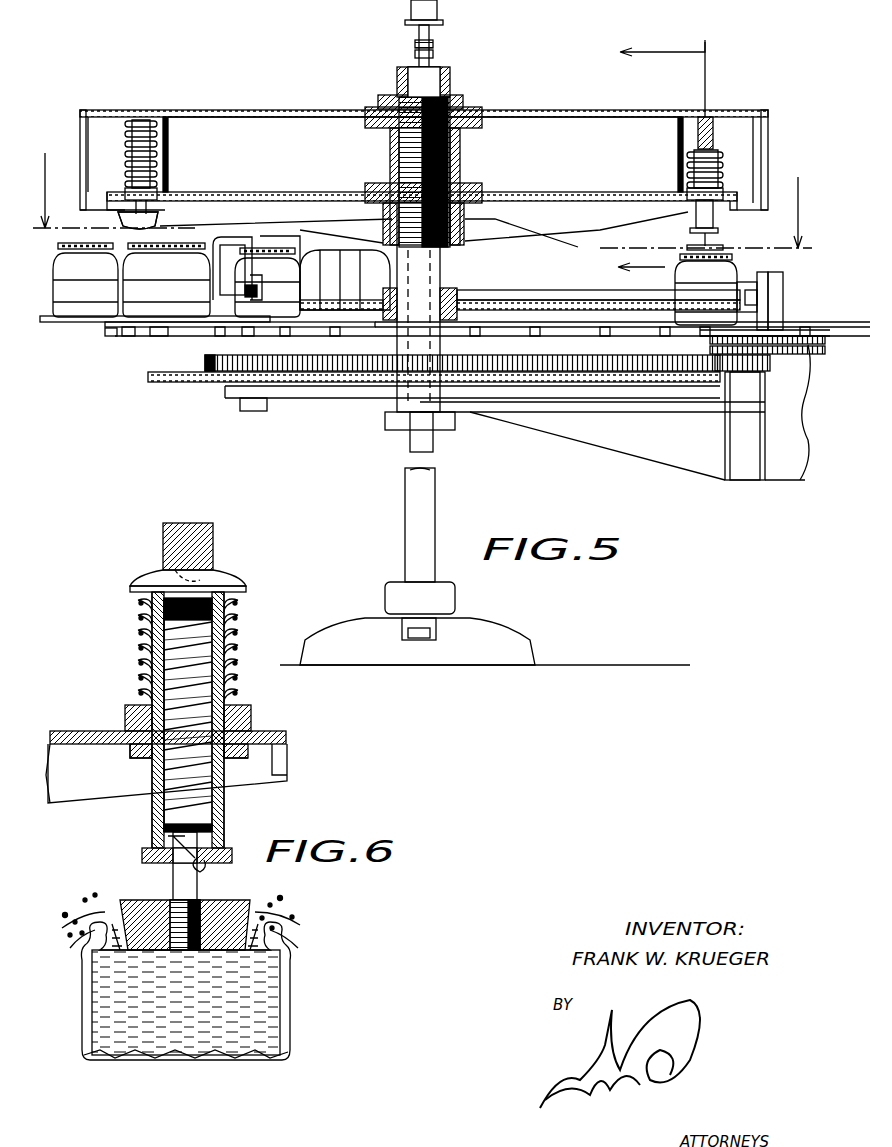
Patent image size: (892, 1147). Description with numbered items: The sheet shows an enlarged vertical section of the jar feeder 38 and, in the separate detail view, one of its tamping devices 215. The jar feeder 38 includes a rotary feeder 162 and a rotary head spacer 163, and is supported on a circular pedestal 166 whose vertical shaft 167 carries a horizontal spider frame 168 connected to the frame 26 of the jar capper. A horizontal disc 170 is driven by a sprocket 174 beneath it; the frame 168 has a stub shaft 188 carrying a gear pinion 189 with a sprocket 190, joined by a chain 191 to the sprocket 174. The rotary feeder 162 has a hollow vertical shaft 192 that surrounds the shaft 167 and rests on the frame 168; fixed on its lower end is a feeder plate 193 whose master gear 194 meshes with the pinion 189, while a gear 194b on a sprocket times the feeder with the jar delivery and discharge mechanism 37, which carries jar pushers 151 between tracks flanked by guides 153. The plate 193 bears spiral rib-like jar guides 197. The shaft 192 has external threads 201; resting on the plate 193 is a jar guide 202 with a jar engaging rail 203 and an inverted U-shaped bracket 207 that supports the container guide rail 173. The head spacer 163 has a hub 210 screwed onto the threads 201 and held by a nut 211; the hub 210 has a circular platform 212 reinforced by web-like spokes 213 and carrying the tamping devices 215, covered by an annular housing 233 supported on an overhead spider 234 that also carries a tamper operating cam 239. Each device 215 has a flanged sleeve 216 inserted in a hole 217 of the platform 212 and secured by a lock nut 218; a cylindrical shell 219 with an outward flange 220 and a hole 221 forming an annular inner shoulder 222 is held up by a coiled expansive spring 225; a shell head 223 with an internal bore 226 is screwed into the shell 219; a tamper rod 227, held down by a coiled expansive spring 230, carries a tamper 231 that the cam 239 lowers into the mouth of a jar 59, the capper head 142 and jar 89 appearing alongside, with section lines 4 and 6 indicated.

In FIG. 5, the jar feeder 38 is at (192, 53).
In FIG. 5, the rotary head spacer 163 is at (188, 128).
In FIG. 5, the tamping devices 215 is at (126, 152).
In FIG. 6, the tamping devices 215 is at (127, 638).
In FIG. 5, the circular platform 212 is at (255, 192).
In FIG. 6, the circular platform 212 is at (286, 736).
In FIG. 5, the tamper 231 is at (152, 228).
In FIG. 6, the tamper 231 is at (135, 905).
In FIG. 5, the inverted U-shaped bracket 207 is at (272, 236).
In FIG. 5, the nut 211 is at (458, 97).
In FIG. 5, the hub 210 is at (390, 150).
In FIG. 5, the external threads 201 is at (455, 158).
In FIG. 5, the overhead spider 234 is at (585, 117).
In FIG. 5, the tamper operating cam 239 is at (712, 135).
In FIG. 6, the tamper operating cam 239 is at (163, 537).
In FIG. 5, the annular housing 233 is at (769, 142).
In FIG. 5, the cylindrical shell 219 is at (712, 222).
In FIG. 6, the cylindrical shell 219 is at (225, 806).
In FIG. 5, the web-like spokes 213 is at (610, 225).
In FIG. 6, the web-like spokes 213 is at (80, 795).
In FIG. 5, the section line 4- 4 is at (417, 200).
In FIG. 5, the section line 6- 6 is at (661, 160).
In FIG. 5, the jar 59 is at (395, 284).
In FIG. 6, the jar 59 is at (290, 995).
In FIG. 5, the container 89 is at (345, 280).
In FIG. 5, the jar engaging rail 203 is at (246, 294).
In FIG. 5, the container guide rail 173 is at (226, 290).
In FIG. 5, the horizontal disc 170 is at (78, 322).
In FIG. 5, the rotary feeder 162 is at (114, 341).
In FIG. 5, the feeder plate 193 is at (182, 334).
In FIG. 5, the jar guides 197 is at (150, 336).
In FIG. 5, the master gear 194 is at (318, 355).
In FIG. 5, the gear pinion 189 is at (665, 378).
In FIG. 5, the chain 191 is at (600, 375).
In FIG. 5, the sprocket 190 is at (665, 396).
In FIG. 5, the stub shaft 188 is at (688, 415).
In FIG. 5, the sprocket 174 is at (225, 385).
In FIG. 5, the hollow vertical shaft 192 is at (442, 282).
In FIG. 5, the jar guide 202 is at (571, 297).
In FIG. 5, the horizontal spider frame 168 is at (462, 415).
In FIG. 5, the vertical shaft 167 is at (405, 478).
In FIG. 5, the circular pedestal 166 is at (362, 627).
In FIG. 5, the jar pushers 151 is at (733, 275).
In FIG. 5, the guides 153 is at (775, 290).
In FIG. 5, the head 142 is at (710, 346).
In FIG. 5, the gear 194b is at (748, 378).
In FIG. 5, the jar delivery and discharge mechanism 37 is at (821, 376).
In FIG. 5, the frame 26 is at (782, 458).
In FIG. 6, the shell head 223 is at (225, 582).
In FIG. 6, the internal bore 226 is at (208, 575).
In FIG. 6, the flanged sleeve 216 is at (228, 672).
In FIG. 6, the coiled expansive spring 225 is at (238, 628).
In FIG. 6, the lock nut 218 is at (240, 715).
In FIG. 6, the hole 217 is at (245, 728).
In FIG. 6, the coiled expansive spring 230 is at (164, 782).
In FIG. 6, the outward flange 220 is at (230, 850).
In FIG. 6, the annular inner shoulder 222 is at (180, 850).
In FIG. 6, the hole 221 is at (203, 862).
In FIG. 6, the tamper rod 227 is at (192, 887).